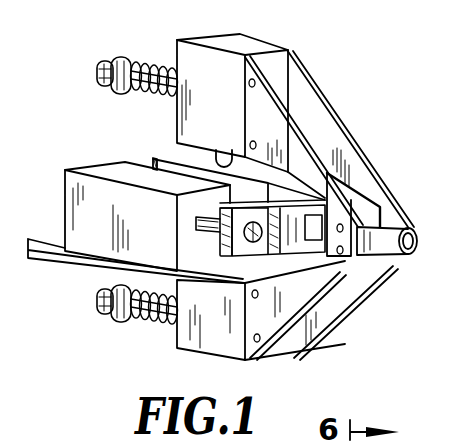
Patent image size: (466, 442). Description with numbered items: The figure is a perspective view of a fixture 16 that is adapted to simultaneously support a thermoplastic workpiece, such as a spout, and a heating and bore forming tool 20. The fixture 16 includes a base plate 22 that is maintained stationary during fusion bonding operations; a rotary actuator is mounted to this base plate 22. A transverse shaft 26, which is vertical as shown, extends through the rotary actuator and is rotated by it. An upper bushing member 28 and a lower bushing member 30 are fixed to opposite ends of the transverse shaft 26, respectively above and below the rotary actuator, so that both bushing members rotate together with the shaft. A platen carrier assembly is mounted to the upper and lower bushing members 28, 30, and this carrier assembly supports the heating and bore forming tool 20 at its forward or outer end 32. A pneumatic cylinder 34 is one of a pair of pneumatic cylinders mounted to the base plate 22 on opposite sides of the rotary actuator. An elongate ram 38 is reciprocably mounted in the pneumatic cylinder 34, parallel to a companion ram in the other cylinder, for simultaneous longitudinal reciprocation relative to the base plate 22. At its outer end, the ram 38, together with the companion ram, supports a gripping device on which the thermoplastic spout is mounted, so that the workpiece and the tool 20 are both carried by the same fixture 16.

The fixture 16 is at (354, 56).
The heating and bore forming tool 20 is at (410, 256).
The base plate 22 is at (68, 258).
The transverse shaft 26 is at (226, 158).
The upper bushing member 28 is at (227, 42).
The lower bushing member 30 is at (203, 344).
The forward or outer end 32 is at (396, 210).
The pneumatic cylinder 34 is at (104, 168).
The ram 38 is at (182, 222).